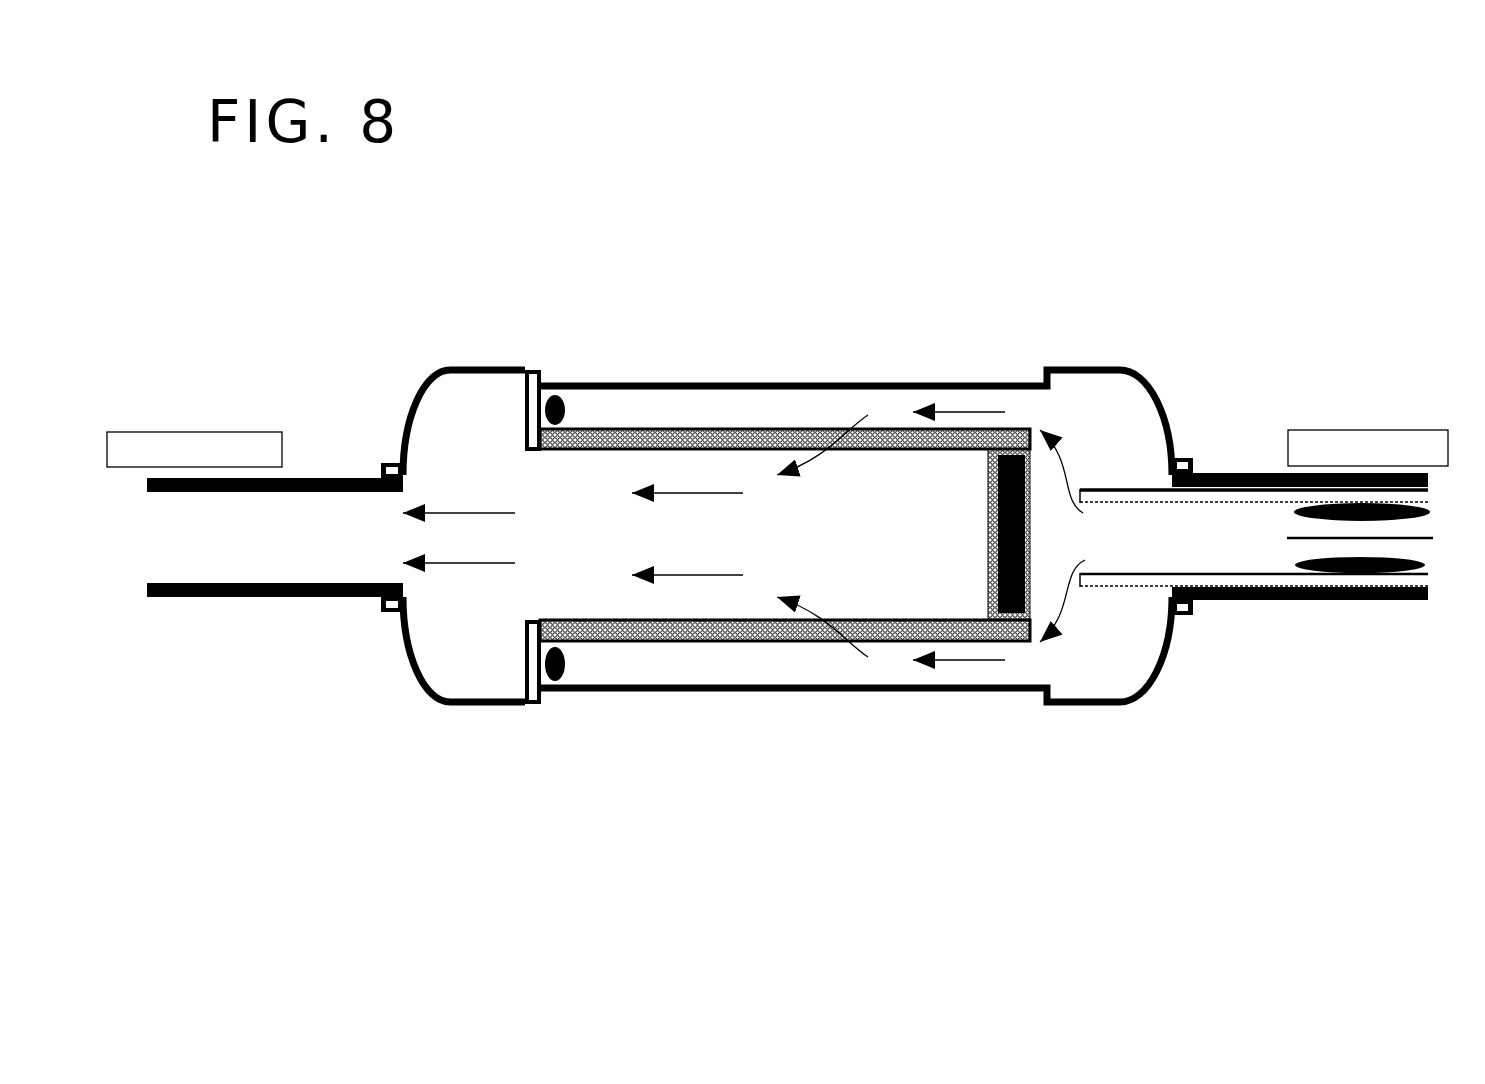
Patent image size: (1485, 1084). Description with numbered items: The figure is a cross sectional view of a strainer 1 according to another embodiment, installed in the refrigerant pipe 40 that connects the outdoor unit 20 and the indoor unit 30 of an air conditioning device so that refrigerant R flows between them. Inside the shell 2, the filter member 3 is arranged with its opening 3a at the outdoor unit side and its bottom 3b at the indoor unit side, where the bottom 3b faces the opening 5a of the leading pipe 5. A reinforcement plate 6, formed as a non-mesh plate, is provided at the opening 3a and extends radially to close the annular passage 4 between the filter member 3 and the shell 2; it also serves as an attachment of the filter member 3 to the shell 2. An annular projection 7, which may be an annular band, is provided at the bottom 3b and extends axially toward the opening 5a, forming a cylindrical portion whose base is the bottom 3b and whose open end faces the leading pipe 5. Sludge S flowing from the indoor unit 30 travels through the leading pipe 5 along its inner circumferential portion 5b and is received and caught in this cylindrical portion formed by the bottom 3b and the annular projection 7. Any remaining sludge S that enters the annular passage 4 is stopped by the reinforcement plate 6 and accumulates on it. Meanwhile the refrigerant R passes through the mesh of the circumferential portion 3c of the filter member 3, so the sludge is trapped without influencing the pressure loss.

The strainer 1 is at (1445, 275).
The shell 2 is at (742, 383).
The filter member 3 is at (798, 428).
The opening 3a is at (545, 547).
The bottom 3b is at (987, 530).
The circumferential portion 3c is at (688, 620).
The annular passage 4 is at (889, 405).
The leading pipe 5 is at (1125, 487).
The opening 5a is at (1088, 538).
The inner circumferential portion 5b is at (1242, 500).
The reinforcement plate 6 is at (523, 662).
The annular projection 7 is at (1020, 430).
The refrigerant R is at (1072, 468).
The sludge S is at (565, 690).
The outdoor unit 20 is at (207, 432).
The indoor unit 30 is at (1365, 430).
The refrigerant pipe 40 is at (318, 478).